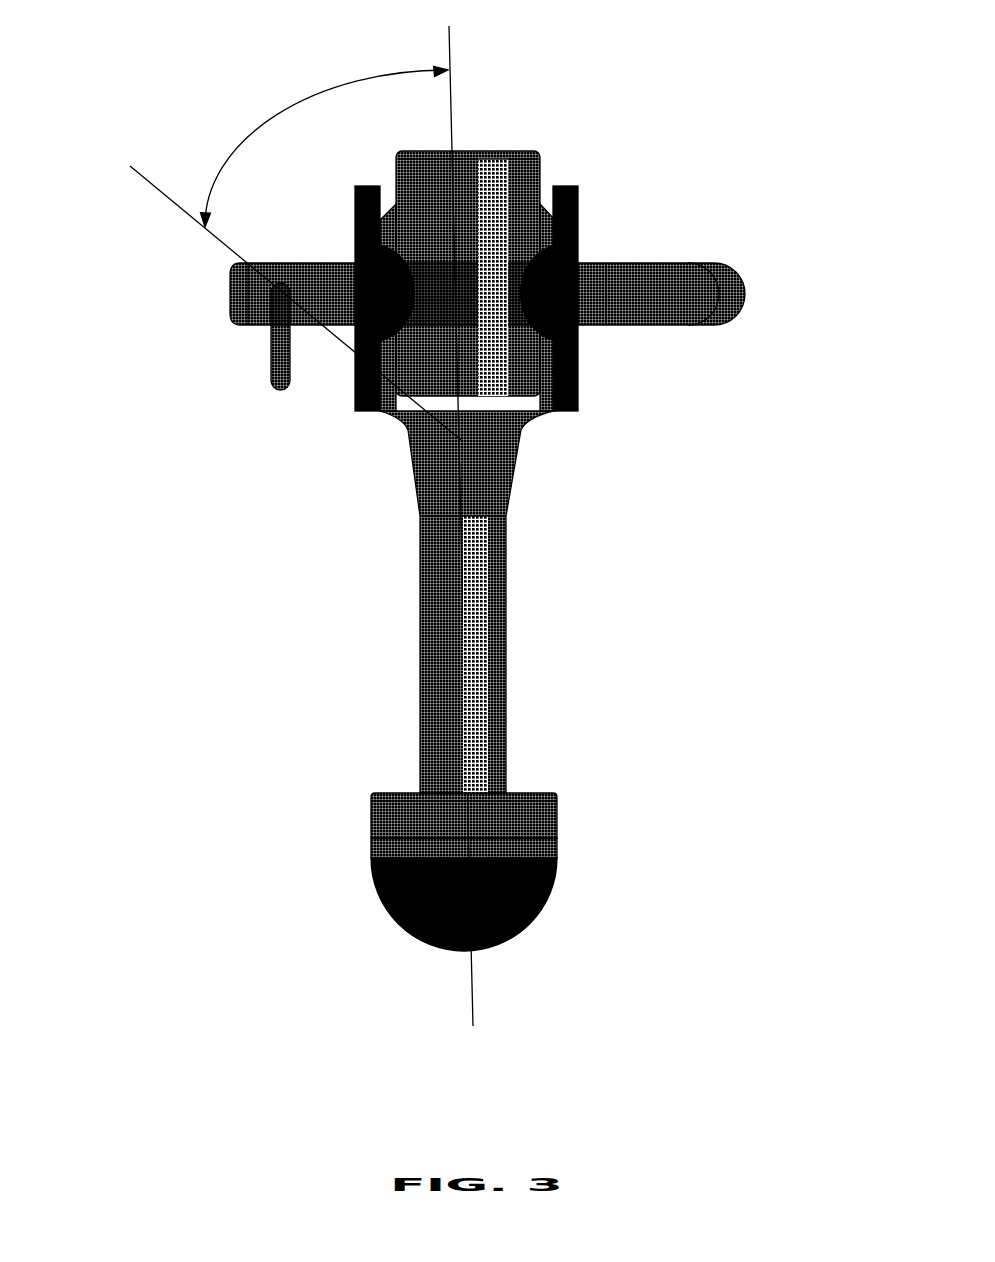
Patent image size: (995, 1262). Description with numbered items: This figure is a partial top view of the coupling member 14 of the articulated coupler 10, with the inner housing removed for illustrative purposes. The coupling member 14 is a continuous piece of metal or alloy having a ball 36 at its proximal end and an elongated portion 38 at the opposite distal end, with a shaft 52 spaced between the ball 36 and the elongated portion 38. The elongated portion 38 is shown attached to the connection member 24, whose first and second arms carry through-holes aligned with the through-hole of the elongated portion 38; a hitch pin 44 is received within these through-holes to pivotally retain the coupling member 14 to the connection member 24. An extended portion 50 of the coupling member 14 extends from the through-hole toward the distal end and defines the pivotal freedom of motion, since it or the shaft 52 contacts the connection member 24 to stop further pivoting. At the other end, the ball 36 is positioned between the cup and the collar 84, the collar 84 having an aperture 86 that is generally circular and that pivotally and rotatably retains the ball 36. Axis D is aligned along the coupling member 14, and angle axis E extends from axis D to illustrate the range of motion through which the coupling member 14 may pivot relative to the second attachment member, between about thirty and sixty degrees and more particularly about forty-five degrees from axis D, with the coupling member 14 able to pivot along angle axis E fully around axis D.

The ball joint assembly 10 is at (198, 66).
The coupling member 14 is at (612, 505).
The connection member 24 is at (618, 222).
The ball 36 is at (487, 887).
The elongated portion 38 is at (437, 262).
The hitch pin 44 is at (687, 303).
The extended portion 50 is at (498, 158).
The shaft 52 is at (473, 630).
The collar 84 is at (550, 785).
The aperture 86 is at (395, 785).
The axis D is at (443, 43).
The angle axis E is at (205, 227).